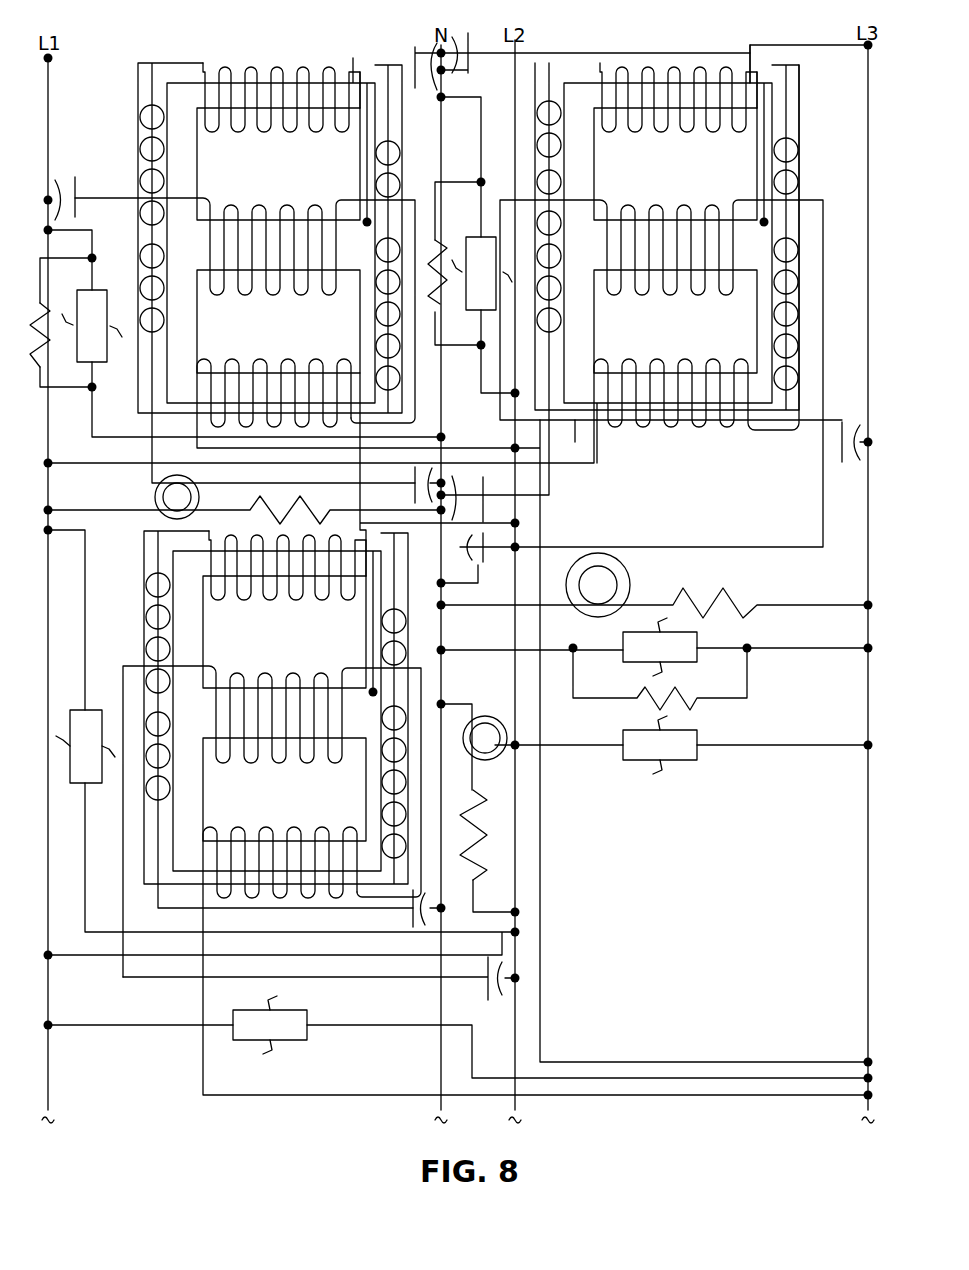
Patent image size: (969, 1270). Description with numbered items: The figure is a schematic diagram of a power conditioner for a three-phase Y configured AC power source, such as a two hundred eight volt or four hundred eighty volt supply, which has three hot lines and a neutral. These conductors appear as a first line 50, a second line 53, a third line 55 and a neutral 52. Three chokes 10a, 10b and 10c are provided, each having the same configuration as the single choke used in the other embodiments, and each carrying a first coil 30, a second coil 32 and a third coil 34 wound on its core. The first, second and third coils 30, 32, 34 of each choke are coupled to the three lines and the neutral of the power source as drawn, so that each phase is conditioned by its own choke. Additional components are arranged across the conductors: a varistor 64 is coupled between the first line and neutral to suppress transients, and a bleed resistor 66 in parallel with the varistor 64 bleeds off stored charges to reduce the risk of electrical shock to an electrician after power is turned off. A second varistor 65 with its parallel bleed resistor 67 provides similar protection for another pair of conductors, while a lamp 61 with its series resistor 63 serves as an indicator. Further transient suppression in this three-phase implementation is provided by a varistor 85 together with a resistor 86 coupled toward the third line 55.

The choke 10a is at (120, 125).
The choke 10b is at (822, 128).
The choke 10c is at (130, 580).
The first coil 30 is at (267, 125).
The second coil 32 is at (225, 290).
The third coil 34 is at (287, 358).
The line 50 is at (50, 142).
The neutral 52 is at (438, 147).
The line 53 is at (513, 118).
The line 55 is at (866, 545).
The lamp 61 is at (483, 716).
The series resistor 63 is at (467, 805).
The varistor 64 is at (92, 326).
The varistor 65 is at (482, 273).
The bleed resistor 66 is at (52, 335).
The bleed resistor 67 is at (430, 248).
The varistor 85 is at (697, 640).
The resistor 86 is at (695, 700).